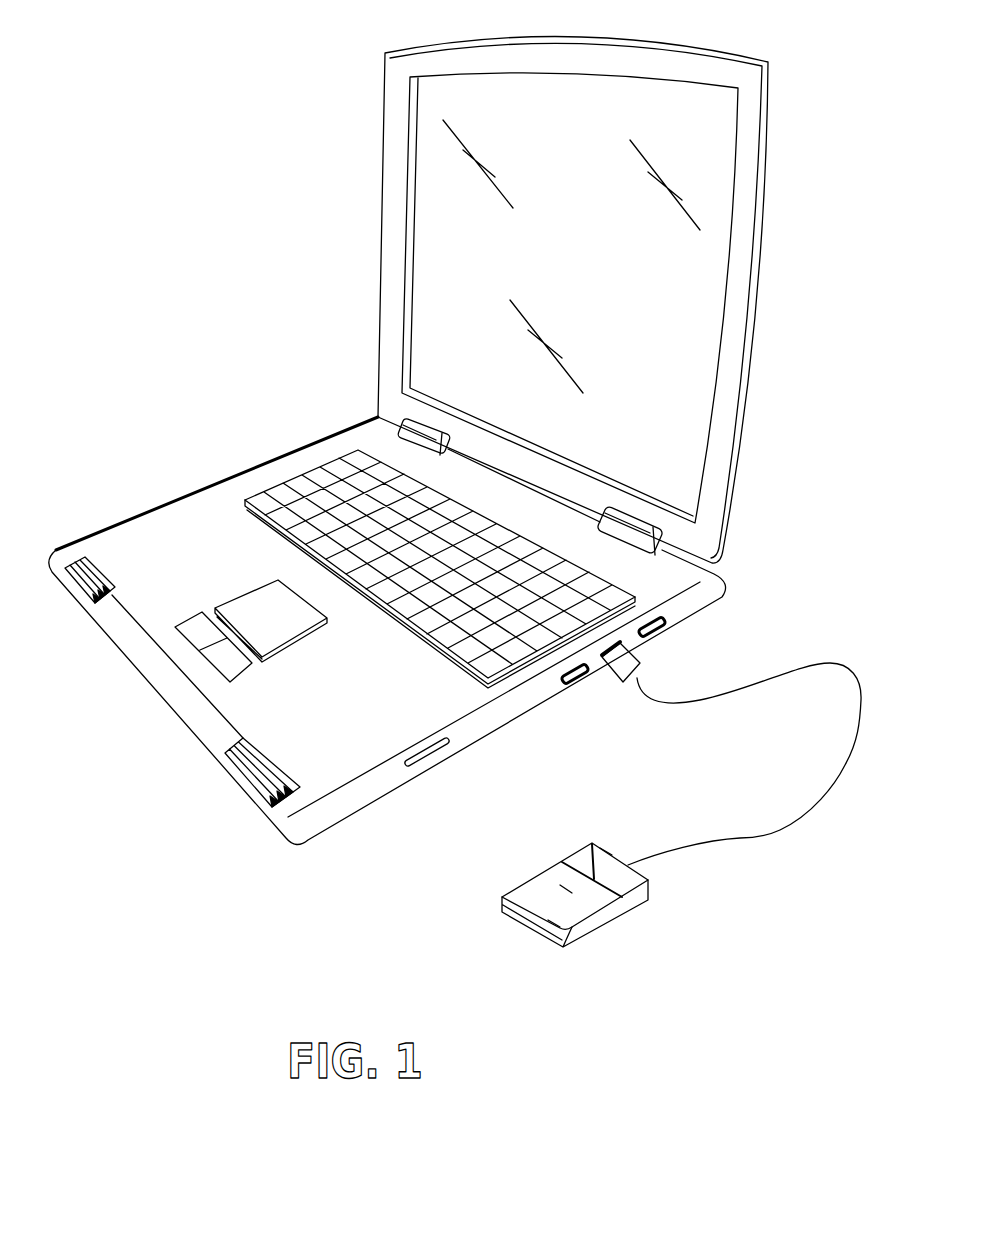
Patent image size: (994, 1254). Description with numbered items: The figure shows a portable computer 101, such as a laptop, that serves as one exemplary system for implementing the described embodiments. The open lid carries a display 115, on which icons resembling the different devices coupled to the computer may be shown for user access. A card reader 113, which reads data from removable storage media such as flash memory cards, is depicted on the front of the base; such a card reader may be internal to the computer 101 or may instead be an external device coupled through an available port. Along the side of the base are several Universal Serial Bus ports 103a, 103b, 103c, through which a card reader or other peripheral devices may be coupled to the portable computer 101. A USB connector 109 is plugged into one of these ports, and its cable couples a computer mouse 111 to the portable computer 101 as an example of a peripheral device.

The portable computer 101 is at (795, 130).
The display 115 is at (712, 272).
The card reader 113 is at (435, 753).
The Universal Serial Bus (USB) port 103a is at (565, 686).
The Universal Serial Bus (USB) port 103b is at (610, 684).
The Universal Serial Bus (USB) port 103c is at (670, 627).
The USB connector 109 is at (630, 665).
The mouse 111 is at (597, 902).